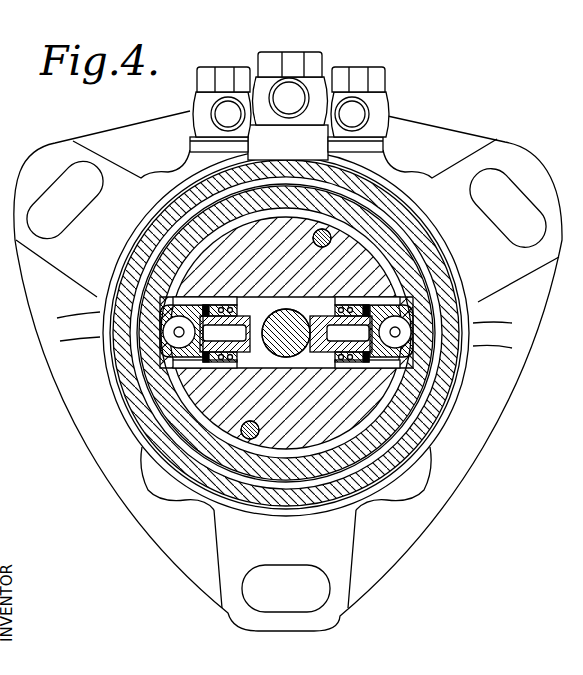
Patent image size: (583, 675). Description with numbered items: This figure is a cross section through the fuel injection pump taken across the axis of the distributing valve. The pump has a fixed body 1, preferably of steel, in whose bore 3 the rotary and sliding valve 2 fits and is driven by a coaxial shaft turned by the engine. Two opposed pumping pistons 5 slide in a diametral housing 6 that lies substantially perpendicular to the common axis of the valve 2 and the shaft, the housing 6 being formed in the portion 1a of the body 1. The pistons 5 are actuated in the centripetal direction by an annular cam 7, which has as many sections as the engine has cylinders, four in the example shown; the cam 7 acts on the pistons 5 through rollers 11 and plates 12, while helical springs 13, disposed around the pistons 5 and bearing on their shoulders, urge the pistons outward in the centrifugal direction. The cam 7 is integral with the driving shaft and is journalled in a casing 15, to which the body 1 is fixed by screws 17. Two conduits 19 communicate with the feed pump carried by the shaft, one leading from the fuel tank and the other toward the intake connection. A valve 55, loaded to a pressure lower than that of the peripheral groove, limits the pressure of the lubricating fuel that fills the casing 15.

The fixed body 1 is at (390, 275).
The portion of body 1a is at (372, 258).
The rotary and sliding valve 2 is at (238, 362).
The bore 3 is at (268, 348).
The pumping pistons 5 is at (173, 358).
The diametral housing 6 is at (305, 340).
The annular cam 7 is at (415, 362).
The rollers 11 is at (168, 338).
The plates 12 is at (175, 310).
The springs 13 is at (213, 366).
The casing 15 is at (120, 313).
The screws 17 is at (322, 232).
The conduits 19 is at (228, 110).
The valve 55 is at (312, 82).